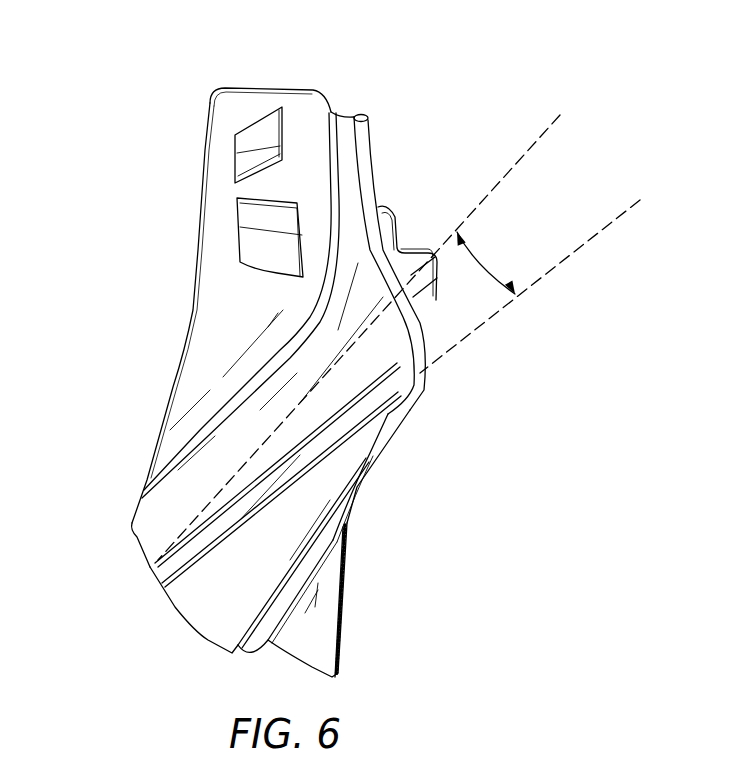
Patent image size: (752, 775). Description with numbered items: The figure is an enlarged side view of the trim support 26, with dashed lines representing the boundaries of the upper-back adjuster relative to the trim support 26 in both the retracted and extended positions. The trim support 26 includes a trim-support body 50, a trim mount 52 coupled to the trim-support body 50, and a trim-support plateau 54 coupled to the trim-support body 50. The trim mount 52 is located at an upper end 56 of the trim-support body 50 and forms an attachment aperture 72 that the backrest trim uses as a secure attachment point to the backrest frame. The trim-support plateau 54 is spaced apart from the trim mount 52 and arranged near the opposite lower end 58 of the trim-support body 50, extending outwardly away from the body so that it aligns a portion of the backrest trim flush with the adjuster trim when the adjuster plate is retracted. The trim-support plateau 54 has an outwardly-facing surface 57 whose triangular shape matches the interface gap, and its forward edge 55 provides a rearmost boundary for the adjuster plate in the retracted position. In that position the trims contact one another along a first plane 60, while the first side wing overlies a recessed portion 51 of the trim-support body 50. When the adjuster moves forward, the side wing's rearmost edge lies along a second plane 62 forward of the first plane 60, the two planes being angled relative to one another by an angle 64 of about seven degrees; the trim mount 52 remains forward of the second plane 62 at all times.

The trim support 26 is at (112, 60).
The trim-support body 50 is at (377, 221).
The recessed portion 51 is at (237, 418).
The trim mount 52 is at (251, 104).
The trim-support plateau 54 is at (350, 488).
The forward edge 55 is at (198, 552).
The upper end 56 is at (224, 75).
The outwardly-facing surface 57 is at (273, 540).
The lower end 58 is at (211, 651).
The first plane 60 is at (563, 260).
The second plane 62 is at (517, 163).
The angle 64 is at (497, 253).
The attachment aperture 72 is at (285, 126).